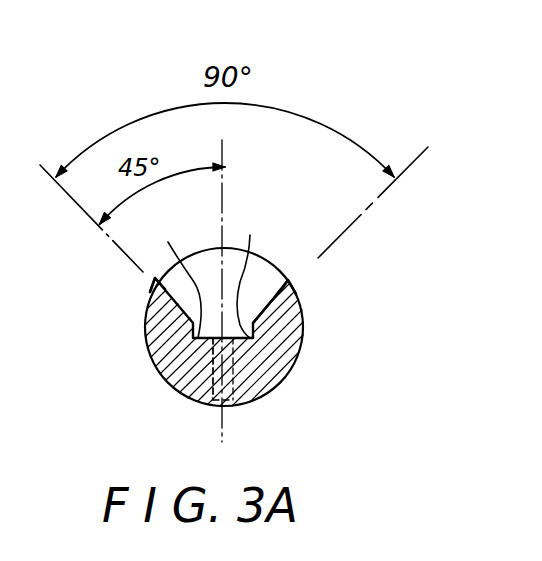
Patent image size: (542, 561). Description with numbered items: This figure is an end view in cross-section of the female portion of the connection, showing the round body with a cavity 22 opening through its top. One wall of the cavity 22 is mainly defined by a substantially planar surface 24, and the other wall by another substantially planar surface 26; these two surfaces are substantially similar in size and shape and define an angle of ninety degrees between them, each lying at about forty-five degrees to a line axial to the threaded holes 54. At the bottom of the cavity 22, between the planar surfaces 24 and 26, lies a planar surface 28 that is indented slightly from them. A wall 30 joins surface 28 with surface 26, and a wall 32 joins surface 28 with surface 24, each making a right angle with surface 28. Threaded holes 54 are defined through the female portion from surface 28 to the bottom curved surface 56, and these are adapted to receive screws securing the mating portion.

The cavity 22 is at (201, 256).
The planar surface 24 is at (289, 280).
The planar surface 26 is at (156, 277).
The planar surface 28 is at (247, 254).
The wall 30 is at (178, 262).
The wall 32 is at (266, 276).
The threaded holes 54 is at (231, 405).
The bottom surface 56 is at (195, 412).